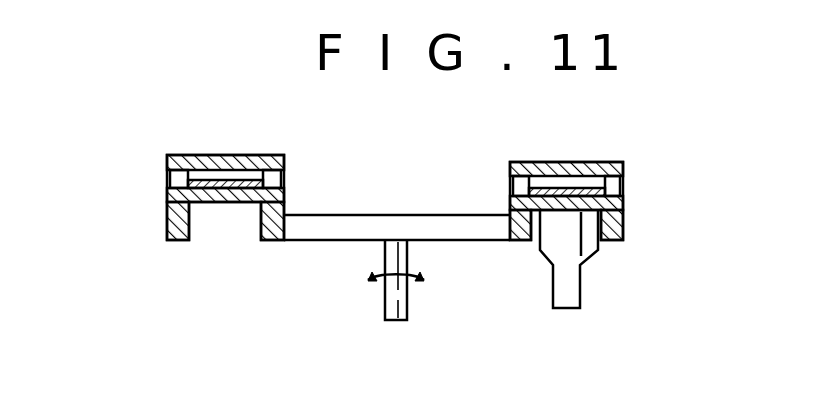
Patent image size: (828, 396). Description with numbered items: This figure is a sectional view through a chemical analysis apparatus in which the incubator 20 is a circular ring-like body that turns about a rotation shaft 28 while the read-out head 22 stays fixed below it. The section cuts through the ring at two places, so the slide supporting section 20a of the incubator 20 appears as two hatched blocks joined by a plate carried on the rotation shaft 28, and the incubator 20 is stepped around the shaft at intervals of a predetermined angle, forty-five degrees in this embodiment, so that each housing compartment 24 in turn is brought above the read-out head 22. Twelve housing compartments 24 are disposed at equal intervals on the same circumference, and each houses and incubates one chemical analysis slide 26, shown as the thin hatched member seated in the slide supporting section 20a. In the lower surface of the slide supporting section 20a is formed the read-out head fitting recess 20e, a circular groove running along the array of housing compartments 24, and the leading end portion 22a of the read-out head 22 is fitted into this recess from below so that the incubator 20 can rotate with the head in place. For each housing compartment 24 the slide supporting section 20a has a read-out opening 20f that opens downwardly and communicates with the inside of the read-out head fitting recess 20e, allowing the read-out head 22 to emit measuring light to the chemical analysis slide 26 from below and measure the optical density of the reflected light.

The incubator 20 is at (593, 144).
The slide supporting section 20a is at (167, 213).
The read-out head fitting recess 20e is at (207, 220).
The read-out opening 20f is at (233, 199).
The read-out head 22 is at (588, 287).
The leading end portion 22a is at (560, 238).
The housing compartment 24 is at (282, 182).
The chemical analysis slide 26 is at (167, 187).
The rotation shaft 28 is at (405, 302).